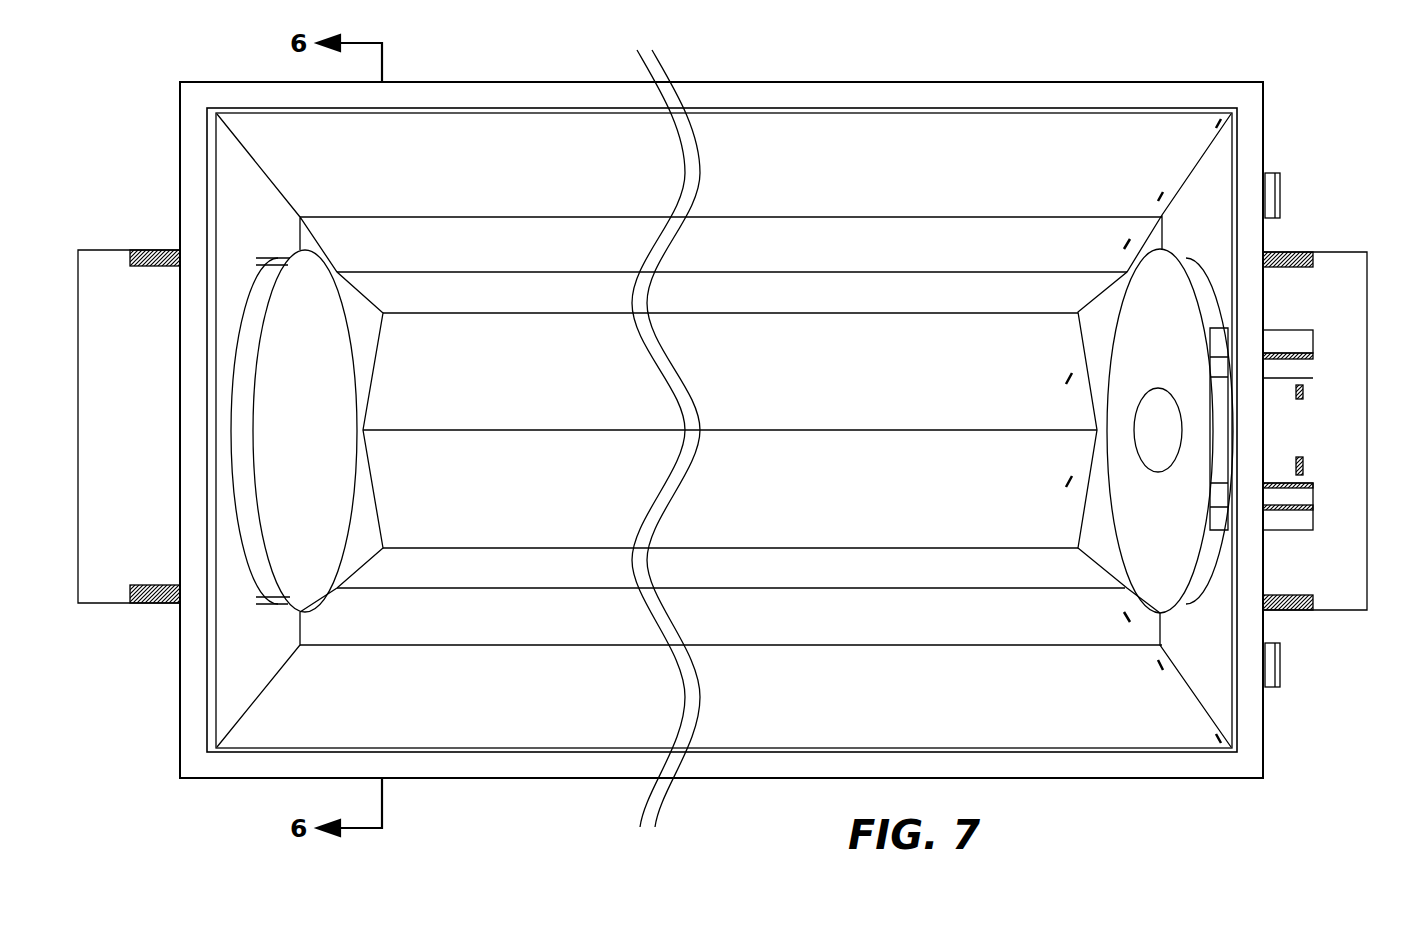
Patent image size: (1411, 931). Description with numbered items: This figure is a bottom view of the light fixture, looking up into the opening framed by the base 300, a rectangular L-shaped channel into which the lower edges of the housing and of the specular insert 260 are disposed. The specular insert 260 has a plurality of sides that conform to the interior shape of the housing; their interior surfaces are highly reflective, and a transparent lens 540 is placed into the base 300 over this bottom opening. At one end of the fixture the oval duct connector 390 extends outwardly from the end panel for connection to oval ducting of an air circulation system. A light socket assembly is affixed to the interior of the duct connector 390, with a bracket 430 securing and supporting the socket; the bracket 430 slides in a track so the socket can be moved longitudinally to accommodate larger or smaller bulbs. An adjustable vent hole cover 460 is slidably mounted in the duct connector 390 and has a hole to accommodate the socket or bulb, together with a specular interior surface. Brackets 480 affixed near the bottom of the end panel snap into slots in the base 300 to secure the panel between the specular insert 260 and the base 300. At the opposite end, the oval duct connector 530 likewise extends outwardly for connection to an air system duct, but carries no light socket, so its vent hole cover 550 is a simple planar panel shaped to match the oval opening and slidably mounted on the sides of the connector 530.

The base 300 is at (915, 82).
The specular insert 260 is at (750, 242).
The transparent lens 540 is at (879, 378).
The vent hole cover 550 is at (347, 318).
The adjustable vent hole cover 460 is at (1152, 566).
The brackets 480 is at (1283, 193).
The oval duct connector 390 is at (1292, 250).
The bracket 430 is at (1310, 393).
The oval duct connector 530 is at (140, 248).